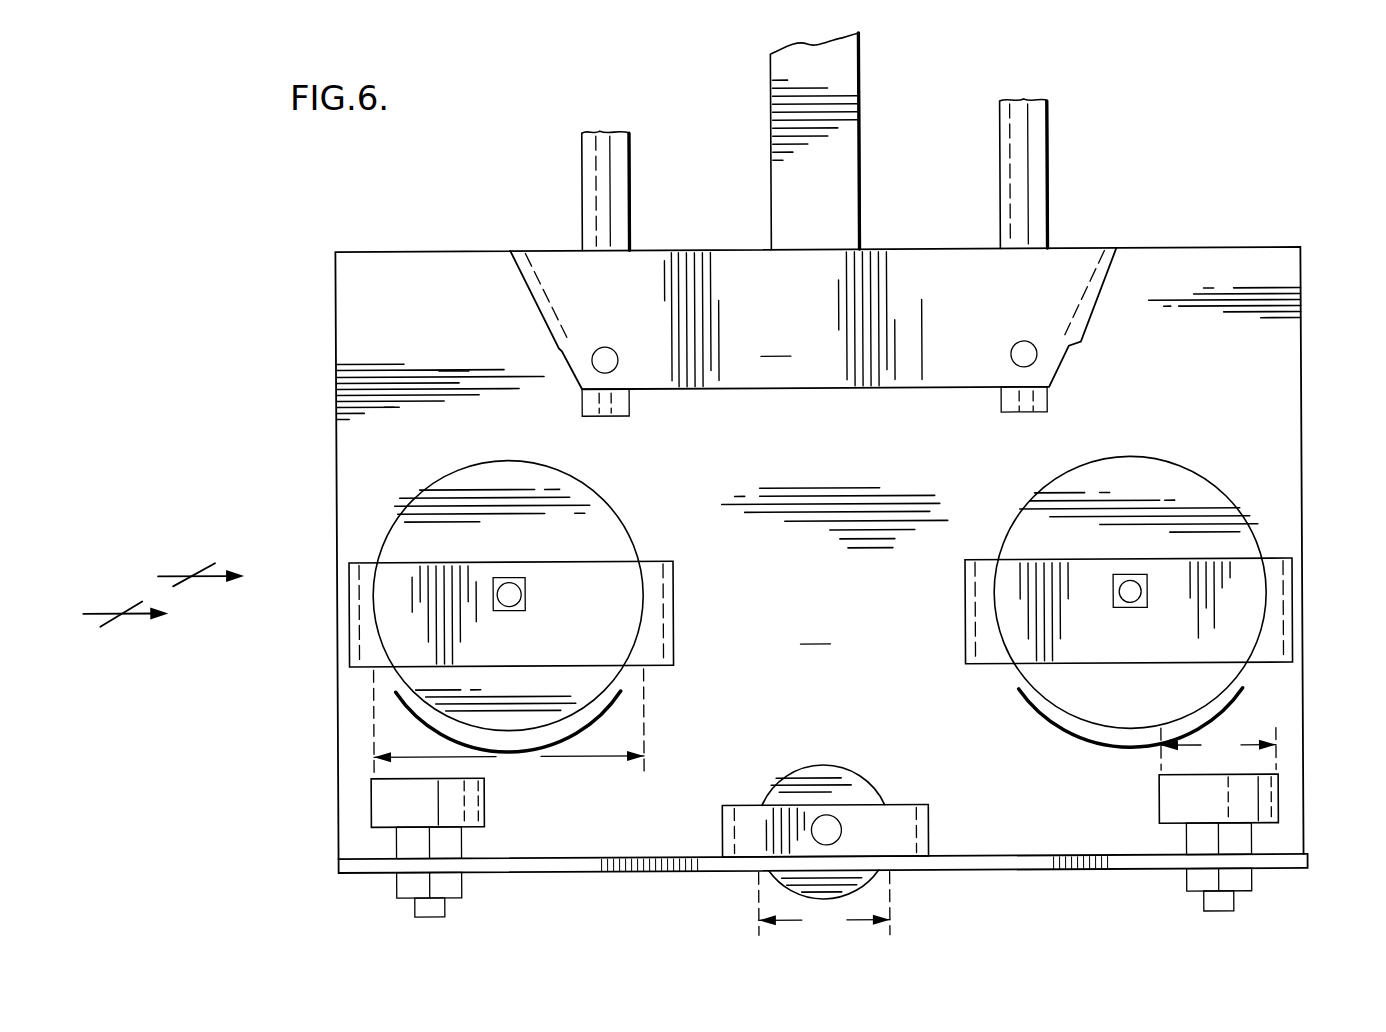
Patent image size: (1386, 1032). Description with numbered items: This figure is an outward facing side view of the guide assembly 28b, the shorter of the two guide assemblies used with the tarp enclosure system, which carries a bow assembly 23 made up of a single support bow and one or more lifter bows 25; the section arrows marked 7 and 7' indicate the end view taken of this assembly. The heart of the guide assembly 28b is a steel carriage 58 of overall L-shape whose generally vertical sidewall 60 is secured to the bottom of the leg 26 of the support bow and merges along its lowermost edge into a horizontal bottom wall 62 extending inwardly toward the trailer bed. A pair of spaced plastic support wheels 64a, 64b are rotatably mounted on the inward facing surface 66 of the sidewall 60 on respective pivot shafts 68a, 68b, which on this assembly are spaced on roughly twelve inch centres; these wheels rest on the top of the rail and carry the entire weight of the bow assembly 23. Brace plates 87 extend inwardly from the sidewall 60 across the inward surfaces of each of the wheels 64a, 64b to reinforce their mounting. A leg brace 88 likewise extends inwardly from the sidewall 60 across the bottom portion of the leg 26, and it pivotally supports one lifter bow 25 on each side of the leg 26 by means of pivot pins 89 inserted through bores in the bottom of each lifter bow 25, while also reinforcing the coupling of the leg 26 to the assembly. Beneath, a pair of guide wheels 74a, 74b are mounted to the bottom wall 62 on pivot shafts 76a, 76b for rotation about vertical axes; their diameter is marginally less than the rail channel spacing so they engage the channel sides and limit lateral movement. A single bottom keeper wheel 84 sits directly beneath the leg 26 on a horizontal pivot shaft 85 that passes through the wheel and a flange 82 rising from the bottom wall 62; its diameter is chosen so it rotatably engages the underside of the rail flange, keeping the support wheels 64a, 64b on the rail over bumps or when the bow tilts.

The bow assembly 23 is at (648, 152).
The lifter bow 25 is at (600, 192).
The leg 26 is at (845, 60).
The guide assembly 28b is at (1238, 196).
The carriage 58 is at (1285, 362).
The sidewall 60 is at (366, 329).
The bottom wall 62 is at (645, 856).
The support wheel 64a is at (1212, 500).
The support wheel 64b is at (587, 515).
The inward facing surface 66 is at (815, 628).
The pivot shaft 68a is at (1138, 592).
The pivot shaft 68b is at (515, 597).
The guide wheel 74a is at (1160, 792).
The guide wheel 74b is at (477, 797).
The pivot shaft 76a is at (1225, 906).
The pivot shaft 76b is at (440, 906).
The flange 82 is at (930, 824).
The keeper wheel 84 is at (858, 785).
The pivot shaft 85 is at (838, 828).
The brace plate 87 is at (648, 593).
The leg brace 88 is at (813, 332).
The pivot pin 89 is at (617, 354).
The section line 7 is at (201, 562).
The section line 7' is at (125, 602).